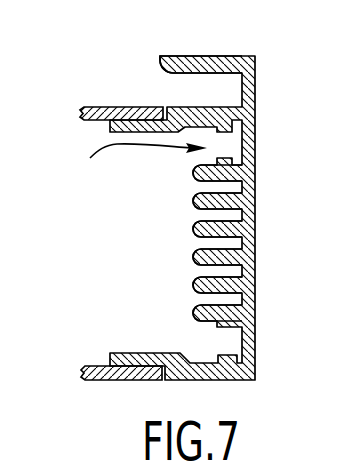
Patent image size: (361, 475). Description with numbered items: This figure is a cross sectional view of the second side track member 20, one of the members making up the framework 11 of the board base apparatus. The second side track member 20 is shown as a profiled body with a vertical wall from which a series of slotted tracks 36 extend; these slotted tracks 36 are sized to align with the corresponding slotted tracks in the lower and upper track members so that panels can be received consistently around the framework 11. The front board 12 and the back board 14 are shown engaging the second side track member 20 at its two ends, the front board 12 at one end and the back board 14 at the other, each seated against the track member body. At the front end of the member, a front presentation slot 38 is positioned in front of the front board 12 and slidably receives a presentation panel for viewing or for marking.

The framework 11 is at (134, 161).
The front board 12 is at (95, 107).
The back board 14 is at (102, 380).
The second side track member 20 is at (257, 207).
The slotted tracks 36 is at (192, 295).
The front presentation slot 38 is at (192, 93).